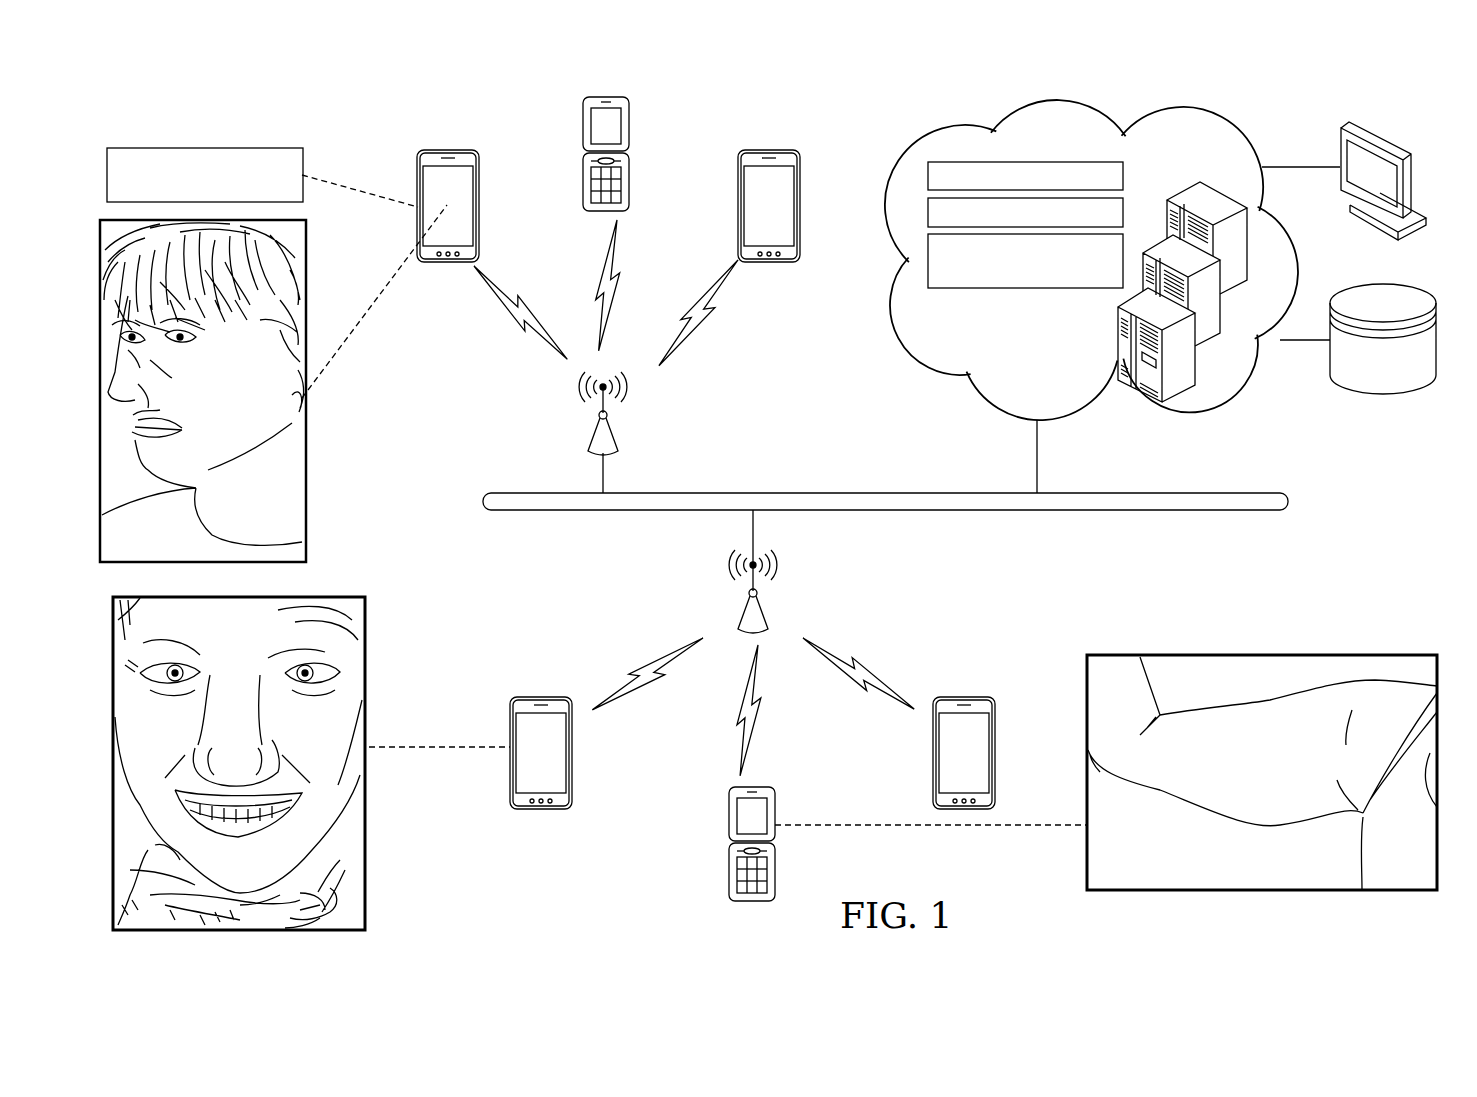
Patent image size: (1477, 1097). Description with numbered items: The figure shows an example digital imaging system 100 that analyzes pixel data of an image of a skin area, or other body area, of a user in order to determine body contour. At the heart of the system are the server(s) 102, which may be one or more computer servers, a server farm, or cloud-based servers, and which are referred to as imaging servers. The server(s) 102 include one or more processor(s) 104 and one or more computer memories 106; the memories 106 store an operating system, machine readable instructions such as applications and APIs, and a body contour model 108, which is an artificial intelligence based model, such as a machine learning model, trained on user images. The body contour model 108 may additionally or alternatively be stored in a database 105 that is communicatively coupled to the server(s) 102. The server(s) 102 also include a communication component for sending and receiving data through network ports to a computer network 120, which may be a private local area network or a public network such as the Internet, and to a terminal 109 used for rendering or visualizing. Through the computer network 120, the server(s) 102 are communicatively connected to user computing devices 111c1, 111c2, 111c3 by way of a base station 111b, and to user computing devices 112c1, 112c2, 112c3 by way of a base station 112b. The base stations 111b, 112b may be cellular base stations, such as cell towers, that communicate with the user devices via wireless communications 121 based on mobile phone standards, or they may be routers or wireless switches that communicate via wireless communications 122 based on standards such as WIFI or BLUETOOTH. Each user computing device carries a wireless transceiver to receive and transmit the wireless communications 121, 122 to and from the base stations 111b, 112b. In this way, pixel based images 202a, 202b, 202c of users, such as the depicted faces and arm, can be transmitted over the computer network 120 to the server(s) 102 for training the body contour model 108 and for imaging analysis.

The digital imaging system 100 is at (288, 102).
The server(s) 102 is at (1200, 112).
The processor(s) 104 is at (1075, 160).
The database 105 is at (1400, 283).
The computer memories 106 is at (926, 213).
The body contour model 108 is at (303, 160).
The terminal 109 is at (1404, 114).
The base station 111b is at (622, 424).
The user computing device 111c1 is at (479, 205).
The user computing device 111c2 is at (629, 128).
The user computing device 111c3 is at (737, 207).
The base station 112b is at (745, 608).
The user computing device 112c1 is at (573, 758).
The user computing device 112c2 is at (728, 828).
The user computing device 112c3 is at (932, 755).
The computer network 120 is at (1238, 490).
The wireless communications 121 is at (622, 257).
The wireless communications 122 is at (534, 332).
The image 202a is at (307, 418).
The image 202b is at (1262, 655).
The image 202c is at (366, 680).